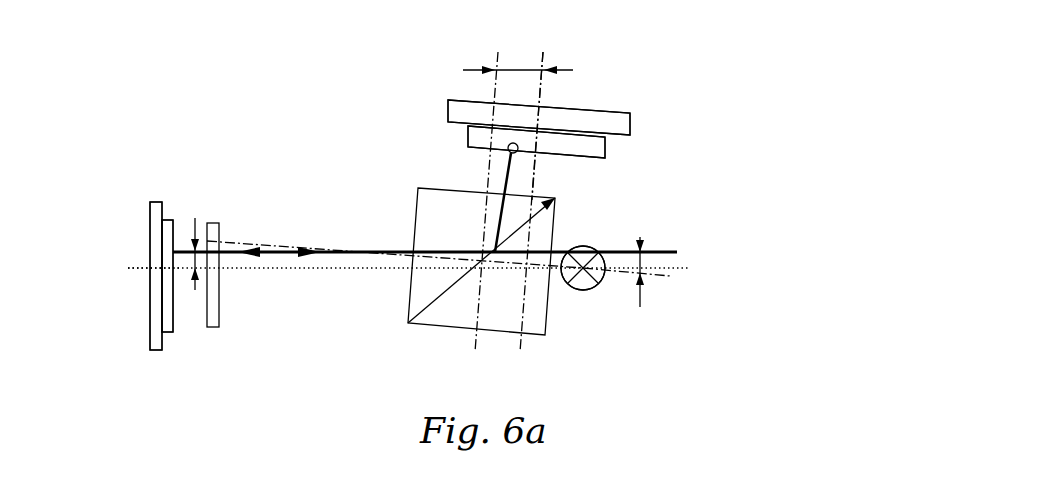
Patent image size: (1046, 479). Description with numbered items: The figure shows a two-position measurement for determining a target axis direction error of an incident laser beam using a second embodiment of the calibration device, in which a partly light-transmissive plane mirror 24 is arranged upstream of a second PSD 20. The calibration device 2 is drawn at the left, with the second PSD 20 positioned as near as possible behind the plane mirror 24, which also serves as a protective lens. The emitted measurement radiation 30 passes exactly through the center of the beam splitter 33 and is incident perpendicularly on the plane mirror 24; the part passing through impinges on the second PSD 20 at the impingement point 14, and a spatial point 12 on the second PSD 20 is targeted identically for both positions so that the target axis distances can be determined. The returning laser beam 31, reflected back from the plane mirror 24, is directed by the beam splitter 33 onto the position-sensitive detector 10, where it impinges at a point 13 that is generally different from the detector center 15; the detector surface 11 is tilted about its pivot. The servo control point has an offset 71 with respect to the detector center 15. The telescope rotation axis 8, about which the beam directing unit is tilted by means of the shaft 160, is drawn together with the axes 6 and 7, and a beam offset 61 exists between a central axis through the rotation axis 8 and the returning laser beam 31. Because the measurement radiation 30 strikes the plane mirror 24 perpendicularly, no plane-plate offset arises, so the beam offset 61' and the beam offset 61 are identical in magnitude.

The sensor unit 2 is at (141, 239).
The second PSD 20 is at (117, 293).
The impingement point 14 is at (125, 268).
The spatial point 12 is at (127, 283).
The partly light-transmissive plane mirror 24 is at (163, 323).
The emitted measurement radiation 30 is at (425, 289).
The returning laser beam 31 is at (421, 202).
The beam offset 61' is at (390, 225).
The beam splitter 33 is at (516, 298).
The point 13 is at (556, 169).
The position-sensitive detector 10 is at (604, 109).
The first reflector surface 11 is at (487, 99).
The axis 7 is at (482, 132).
The detector center 15 is at (589, 122).
The offset 71 is at (497, 44).
The telescope rotation axis 8 is at (624, 224).
The shaft 160 is at (674, 327).
The axis 6 is at (662, 303).
The beam offset 61 is at (710, 272).